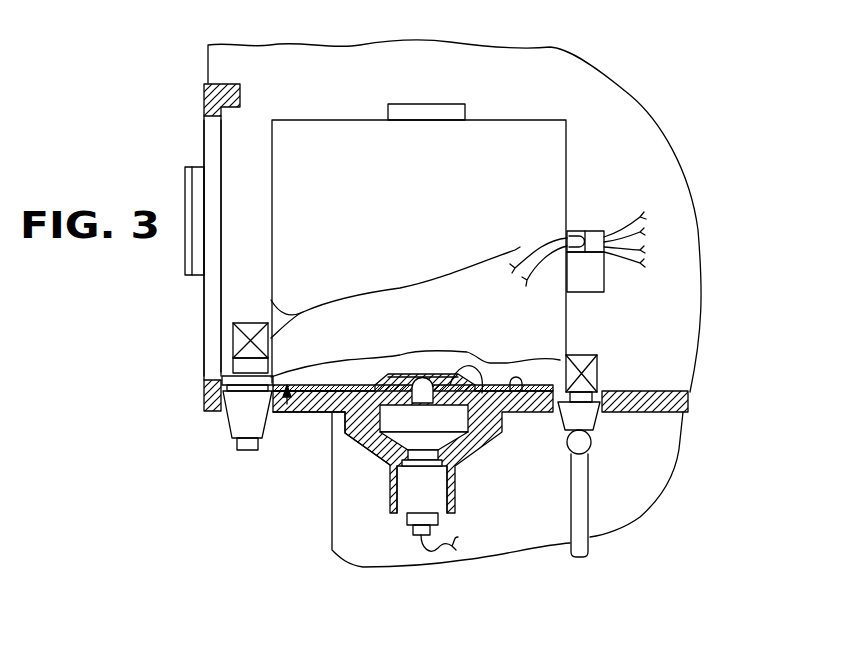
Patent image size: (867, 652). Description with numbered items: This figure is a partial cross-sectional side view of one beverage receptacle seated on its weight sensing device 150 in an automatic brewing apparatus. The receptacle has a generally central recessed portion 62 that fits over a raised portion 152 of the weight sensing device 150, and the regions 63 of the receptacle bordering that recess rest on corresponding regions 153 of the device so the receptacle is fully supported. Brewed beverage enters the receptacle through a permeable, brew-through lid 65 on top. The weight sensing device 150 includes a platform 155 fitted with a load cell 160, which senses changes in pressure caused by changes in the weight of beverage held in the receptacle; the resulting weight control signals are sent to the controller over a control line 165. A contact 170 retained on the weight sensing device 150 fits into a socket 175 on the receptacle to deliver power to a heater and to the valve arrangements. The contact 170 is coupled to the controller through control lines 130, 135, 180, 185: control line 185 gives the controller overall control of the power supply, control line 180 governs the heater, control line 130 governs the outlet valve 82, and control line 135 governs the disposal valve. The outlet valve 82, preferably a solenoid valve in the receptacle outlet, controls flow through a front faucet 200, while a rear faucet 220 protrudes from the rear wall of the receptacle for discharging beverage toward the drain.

The permeable lid 65 is at (420, 104).
The socket 175 is at (585, 231).
The contact 170 is at (600, 231).
The control line 180 is at (515, 268).
The control line 185 is at (563, 385).
The control line 130 is at (270, 296).
The control line 135 is at (640, 232).
The rear faucet 220 is at (600, 381).
The regions on the weight sensing device 153 is at (542, 412).
The outlet valve 82 is at (221, 333).
The front faucet 200 is at (233, 416).
The platform 155 is at (285, 403).
The weight sensing device 150 is at (298, 412).
The raised portion 152 is at (362, 434).
The load cell 160 is at (400, 492).
The control line 165 is at (446, 550).
The central recessed portion 62 is at (482, 393).
The regions of the receptacle 63 is at (524, 393).